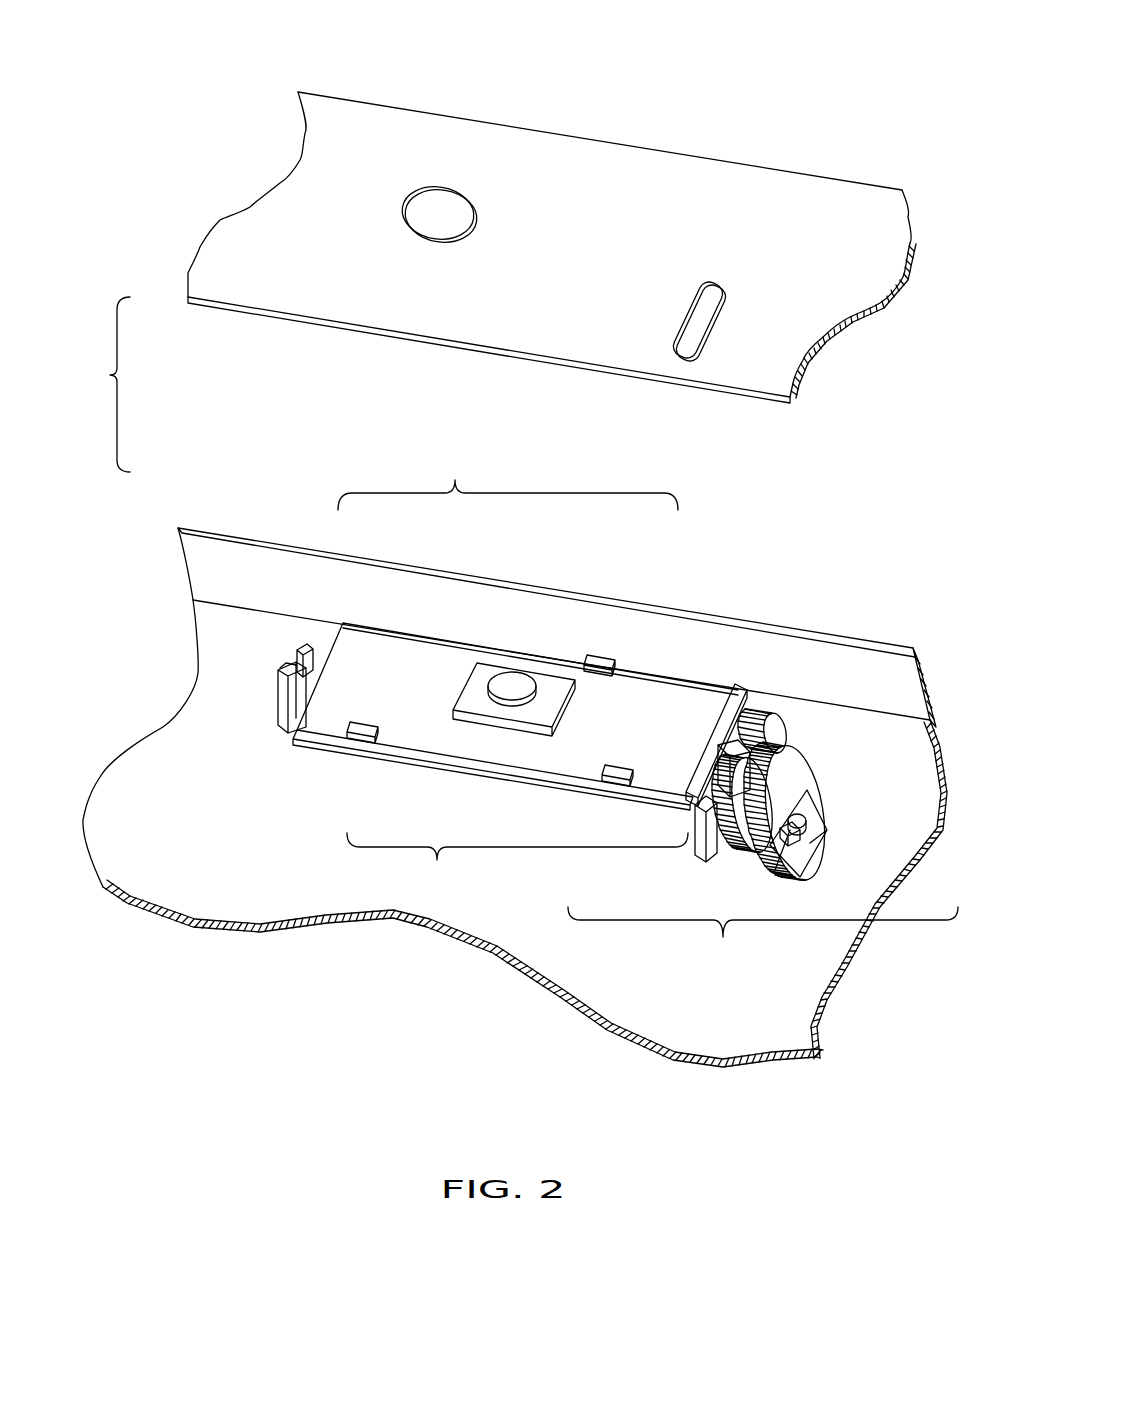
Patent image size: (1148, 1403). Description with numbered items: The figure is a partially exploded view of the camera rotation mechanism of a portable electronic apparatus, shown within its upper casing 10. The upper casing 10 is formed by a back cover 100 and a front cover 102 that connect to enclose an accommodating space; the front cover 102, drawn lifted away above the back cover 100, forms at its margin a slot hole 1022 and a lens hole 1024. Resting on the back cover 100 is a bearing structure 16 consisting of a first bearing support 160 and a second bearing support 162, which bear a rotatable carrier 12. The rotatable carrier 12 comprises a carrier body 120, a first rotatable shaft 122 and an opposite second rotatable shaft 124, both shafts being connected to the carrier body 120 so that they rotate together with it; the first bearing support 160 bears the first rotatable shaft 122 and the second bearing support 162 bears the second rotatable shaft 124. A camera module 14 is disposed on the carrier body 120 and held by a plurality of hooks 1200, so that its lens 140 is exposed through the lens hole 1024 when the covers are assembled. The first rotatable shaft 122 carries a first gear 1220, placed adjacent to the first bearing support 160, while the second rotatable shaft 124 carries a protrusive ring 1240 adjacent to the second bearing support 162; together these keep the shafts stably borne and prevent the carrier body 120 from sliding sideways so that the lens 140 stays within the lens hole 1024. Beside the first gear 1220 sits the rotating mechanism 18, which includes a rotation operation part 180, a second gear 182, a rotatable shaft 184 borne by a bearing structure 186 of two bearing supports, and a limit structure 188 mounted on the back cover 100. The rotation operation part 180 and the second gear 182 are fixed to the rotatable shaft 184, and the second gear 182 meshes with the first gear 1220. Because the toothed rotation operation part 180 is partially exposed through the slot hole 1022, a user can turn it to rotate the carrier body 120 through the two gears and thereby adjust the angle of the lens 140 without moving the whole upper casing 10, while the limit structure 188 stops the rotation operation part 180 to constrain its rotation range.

The upper casing 10 is at (110, 375).
The back cover 100 is at (228, 637).
The front cover 102 is at (240, 287).
The slot hole 1022 is at (738, 265).
The lens hole 1024 is at (491, 178).
The protrusive ring 1240 is at (280, 668).
The rotatable carrier 12 is at (550, 739).
The carrier body 120 is at (445, 750).
The hooks 1200 is at (597, 672).
The first rotatable shaft 122 is at (723, 747).
The first gear 1220 is at (783, 717).
The second rotatable shaft 124 is at (295, 733).
The camera module 14 is at (425, 675).
The lens 140 is at (510, 690).
The bearing structure 16 is at (523, 620).
The first bearing support 160 is at (740, 723).
The second bearing support 162 is at (300, 643).
The rotating mechanism 18 is at (763, 857).
The rotation operation part 180 is at (798, 775).
The second gear 182 is at (732, 843).
The rotatable shaft 184 is at (807, 840).
The bearing structure 186 is at (707, 843).
The limit structure 188 is at (793, 817).